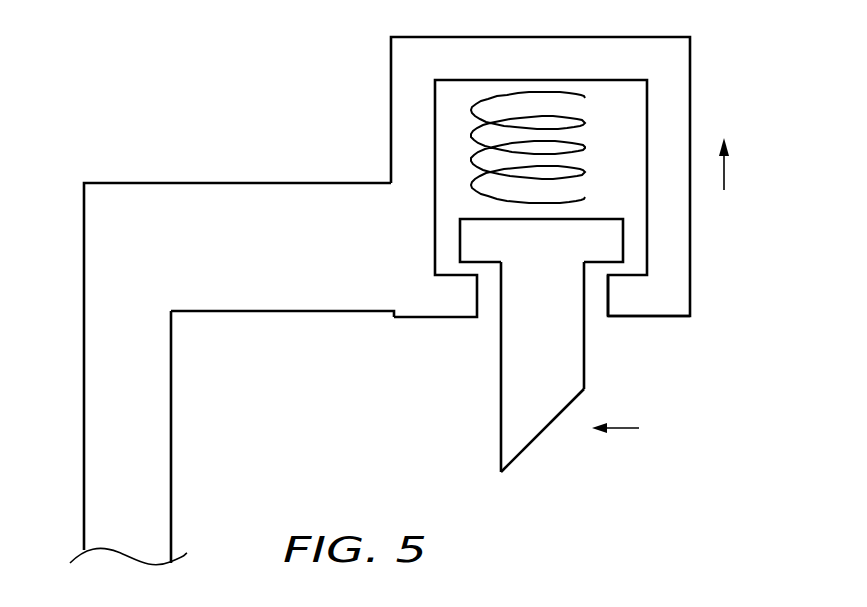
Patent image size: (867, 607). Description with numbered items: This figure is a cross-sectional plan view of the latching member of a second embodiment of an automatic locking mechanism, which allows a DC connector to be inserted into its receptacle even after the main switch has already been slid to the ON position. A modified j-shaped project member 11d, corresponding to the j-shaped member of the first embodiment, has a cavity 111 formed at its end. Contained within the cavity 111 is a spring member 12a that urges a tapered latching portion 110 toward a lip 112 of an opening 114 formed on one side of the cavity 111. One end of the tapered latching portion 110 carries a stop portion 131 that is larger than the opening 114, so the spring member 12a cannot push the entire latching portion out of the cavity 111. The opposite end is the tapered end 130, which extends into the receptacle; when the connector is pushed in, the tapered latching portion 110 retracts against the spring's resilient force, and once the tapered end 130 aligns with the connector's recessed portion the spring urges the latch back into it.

The cavity 111 is at (627, 119).
The lip 112 is at (425, 308).
The opening 114 is at (592, 295).
The modified j-shaped project member 11d is at (100, 413).
The coil spring 12a is at (478, 143).
The stop portion 131 is at (598, 229).
The tapered latching portion 110 is at (573, 365).
The tapered end 130 is at (542, 430).